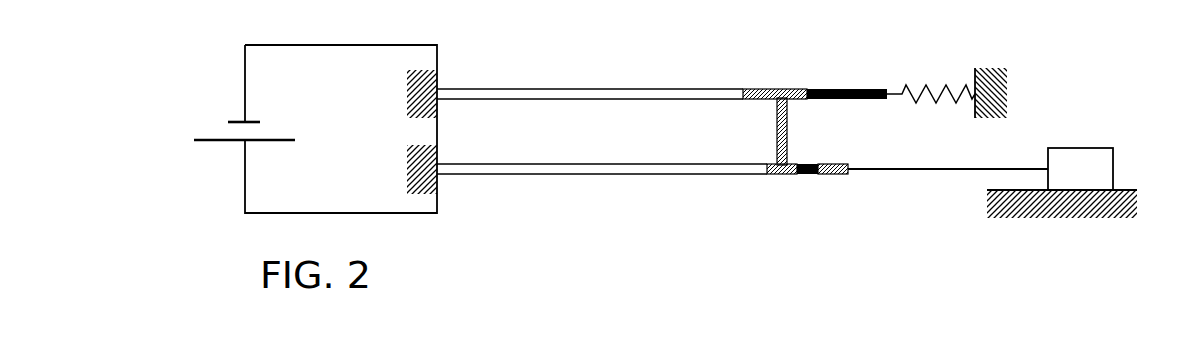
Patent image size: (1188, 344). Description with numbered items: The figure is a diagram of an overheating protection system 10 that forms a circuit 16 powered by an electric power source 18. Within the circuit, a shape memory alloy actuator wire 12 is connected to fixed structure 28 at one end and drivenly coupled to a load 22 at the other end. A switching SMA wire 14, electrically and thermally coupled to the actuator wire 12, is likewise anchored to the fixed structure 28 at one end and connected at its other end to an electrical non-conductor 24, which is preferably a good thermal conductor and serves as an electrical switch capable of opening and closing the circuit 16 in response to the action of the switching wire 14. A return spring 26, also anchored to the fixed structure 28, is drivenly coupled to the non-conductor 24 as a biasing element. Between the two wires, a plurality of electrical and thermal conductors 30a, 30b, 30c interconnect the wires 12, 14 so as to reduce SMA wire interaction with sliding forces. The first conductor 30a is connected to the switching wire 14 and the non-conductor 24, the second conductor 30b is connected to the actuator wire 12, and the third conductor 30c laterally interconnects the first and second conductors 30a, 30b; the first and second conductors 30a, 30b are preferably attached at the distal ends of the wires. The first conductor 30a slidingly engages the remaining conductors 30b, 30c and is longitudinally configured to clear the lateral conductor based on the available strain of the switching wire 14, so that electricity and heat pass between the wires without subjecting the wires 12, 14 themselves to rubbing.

The overheating protection system 10 is at (1046, 23).
The shape memory alloy actuator wire 12 is at (612, 175).
The switching SMA wire 14 is at (614, 89).
The circuit 16 is at (366, 45).
The electric power source 18 is at (218, 141).
The load 22 is at (1113, 170).
The electrical non-conductor 24 is at (857, 89).
The return spring 26 is at (943, 88).
The fixed structure 28 is at (407, 165).
The first electrical and thermal conductor 30a is at (762, 89).
The second electrical and thermal conductor 30b is at (816, 176).
The third electrical and thermal conductor 30c is at (777, 132).